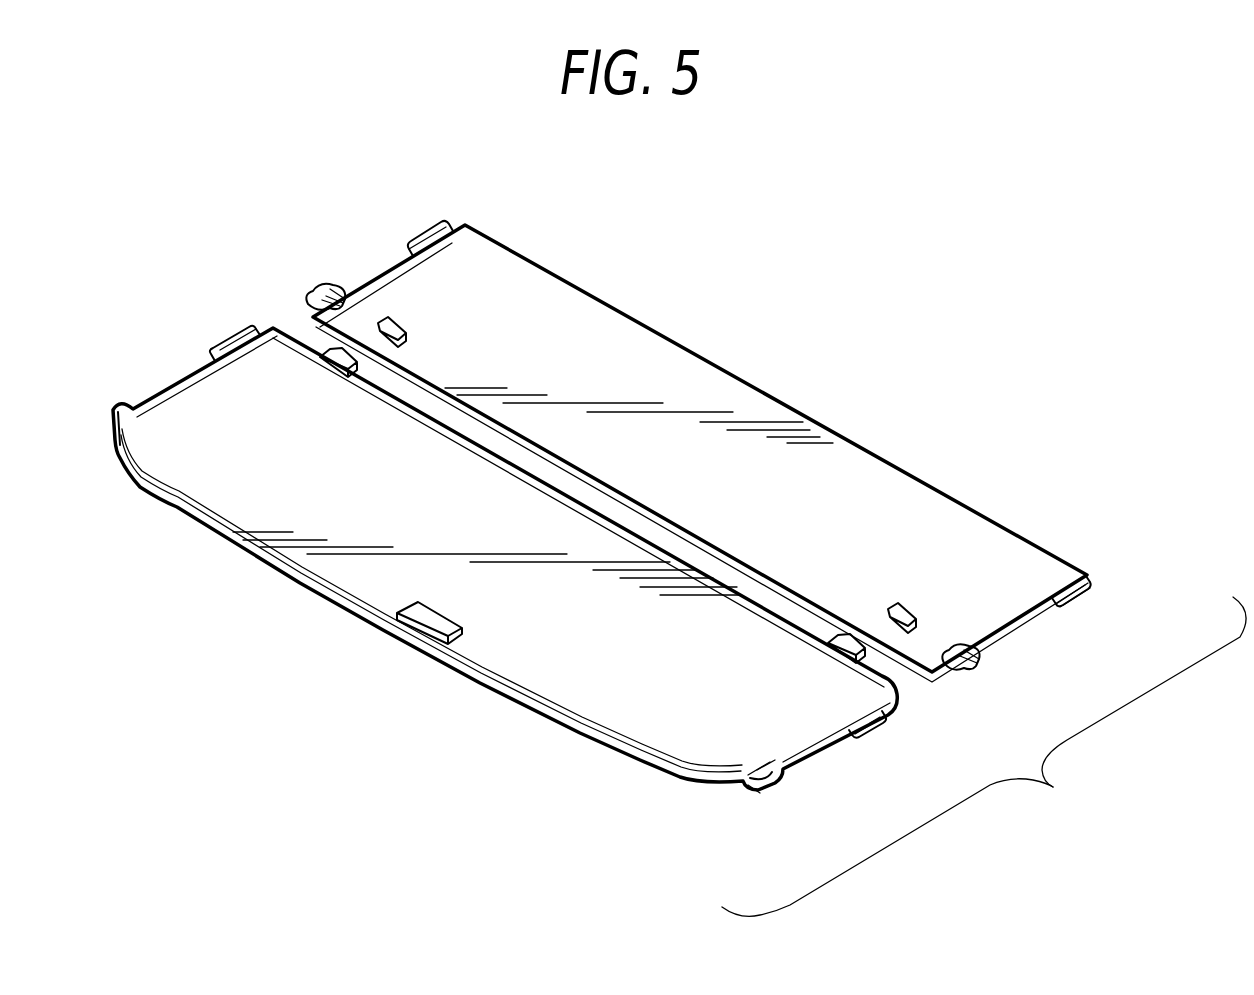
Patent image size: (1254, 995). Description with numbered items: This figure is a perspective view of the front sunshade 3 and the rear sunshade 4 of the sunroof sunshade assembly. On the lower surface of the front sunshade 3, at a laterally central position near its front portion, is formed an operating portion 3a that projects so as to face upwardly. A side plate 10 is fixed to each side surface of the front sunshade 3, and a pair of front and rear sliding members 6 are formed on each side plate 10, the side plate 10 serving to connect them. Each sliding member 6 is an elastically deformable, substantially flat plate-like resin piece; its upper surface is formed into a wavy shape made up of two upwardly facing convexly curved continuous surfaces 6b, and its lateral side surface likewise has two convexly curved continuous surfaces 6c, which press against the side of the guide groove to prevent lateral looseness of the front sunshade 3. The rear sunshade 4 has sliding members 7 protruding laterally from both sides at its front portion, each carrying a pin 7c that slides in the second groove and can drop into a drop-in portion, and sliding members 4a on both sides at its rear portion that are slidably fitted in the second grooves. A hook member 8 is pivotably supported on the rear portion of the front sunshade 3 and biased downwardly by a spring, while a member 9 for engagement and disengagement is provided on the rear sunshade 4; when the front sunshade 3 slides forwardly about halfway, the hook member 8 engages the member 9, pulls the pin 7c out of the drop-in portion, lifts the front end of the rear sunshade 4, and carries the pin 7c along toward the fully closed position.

The front sunshade 3 is at (660, 718).
The operating portion 3a is at (393, 620).
The rear sunshade 4 is at (836, 470).
The sliding members 4a is at (440, 219).
The sliding members 6 is at (240, 332).
The convexly curved continuous surfaces 6b is at (778, 790).
The convexly curved continuous surfaces 6c is at (778, 780).
The sliding members 7 is at (330, 289).
The pin 7c is at (962, 675).
The hook member 8 is at (345, 377).
The member for engagement 9 is at (406, 330).
The side plate 10 is at (167, 385).